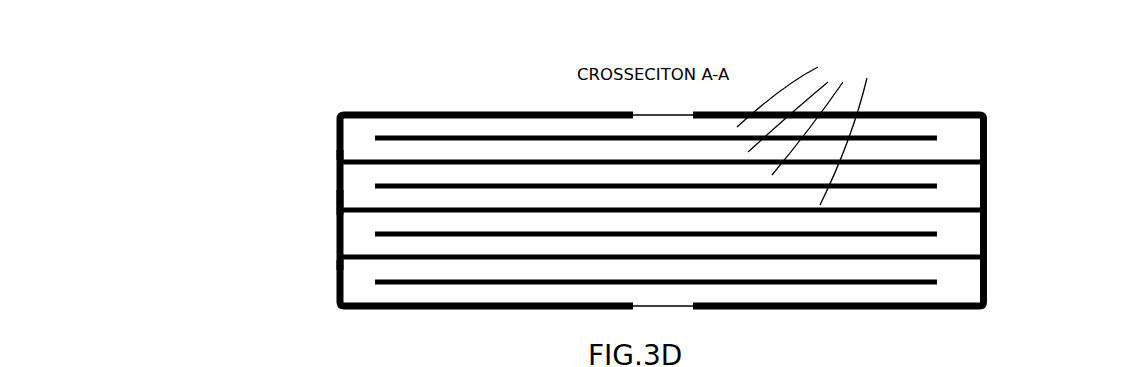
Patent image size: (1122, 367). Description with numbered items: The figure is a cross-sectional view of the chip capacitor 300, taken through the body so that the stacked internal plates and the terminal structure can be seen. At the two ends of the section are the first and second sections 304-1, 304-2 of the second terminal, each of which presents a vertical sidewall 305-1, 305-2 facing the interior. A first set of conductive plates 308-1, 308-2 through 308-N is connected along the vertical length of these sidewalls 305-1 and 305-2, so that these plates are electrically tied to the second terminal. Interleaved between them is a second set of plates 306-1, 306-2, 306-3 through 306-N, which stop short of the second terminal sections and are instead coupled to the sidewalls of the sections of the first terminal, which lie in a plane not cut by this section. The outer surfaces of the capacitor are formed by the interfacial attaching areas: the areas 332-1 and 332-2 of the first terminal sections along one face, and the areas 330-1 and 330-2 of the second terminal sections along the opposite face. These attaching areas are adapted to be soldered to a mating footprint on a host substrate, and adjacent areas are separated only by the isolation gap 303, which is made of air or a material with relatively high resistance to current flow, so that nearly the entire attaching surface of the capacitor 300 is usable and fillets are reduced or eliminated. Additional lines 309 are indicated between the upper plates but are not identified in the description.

The chip capacitor 300 is at (358, 73).
The isolation gap 303 is at (668, 317).
The second terminal section 304-1 is at (994, 172).
The second terminal section 304-2 is at (330, 172).
The sidewall 305-1 is at (987, 133).
The sidewall 305-2 is at (337, 200).
The plate 306-1 is at (937, 136).
The plate 306-2 is at (937, 187).
The plate 306-3 is at (937, 235).
The plate 306-N is at (913, 283).
The plate 308-1 is at (363, 162).
The plate 308-2 is at (362, 210).
The plate 308-N is at (373, 257).
The separator layers 309 is at (802, 129).
The interfacial attaching area 330-1 is at (445, 310).
The interfacial attaching section 330-2 is at (820, 310).
The interfacial attaching area 332-1 is at (435, 112).
The interfacial attaching area 332-2 is at (913, 110).